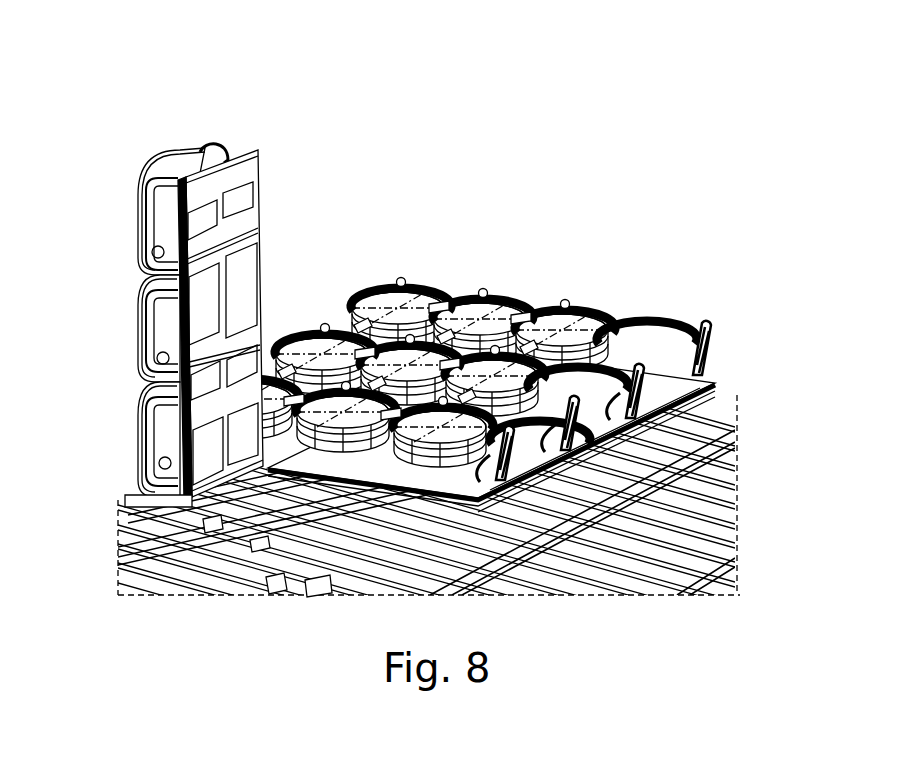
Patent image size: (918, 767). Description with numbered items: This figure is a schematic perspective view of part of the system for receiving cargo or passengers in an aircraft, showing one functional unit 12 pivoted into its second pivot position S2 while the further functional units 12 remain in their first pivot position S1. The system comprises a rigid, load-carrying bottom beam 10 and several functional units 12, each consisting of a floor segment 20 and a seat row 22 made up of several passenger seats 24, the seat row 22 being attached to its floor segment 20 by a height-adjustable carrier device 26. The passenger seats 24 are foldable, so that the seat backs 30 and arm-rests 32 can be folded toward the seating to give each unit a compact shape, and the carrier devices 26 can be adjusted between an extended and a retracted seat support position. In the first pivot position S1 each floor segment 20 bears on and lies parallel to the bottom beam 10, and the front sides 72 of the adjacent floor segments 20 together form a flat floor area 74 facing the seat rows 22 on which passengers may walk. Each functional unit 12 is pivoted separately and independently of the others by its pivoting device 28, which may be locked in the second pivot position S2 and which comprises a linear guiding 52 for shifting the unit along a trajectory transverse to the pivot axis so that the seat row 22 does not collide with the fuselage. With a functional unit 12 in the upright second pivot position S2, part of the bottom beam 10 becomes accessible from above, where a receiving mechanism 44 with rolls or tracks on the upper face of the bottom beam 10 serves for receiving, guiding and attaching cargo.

The bottom beam 10 is at (455, 428).
The functional unit 12 is at (263, 122).
The floor segment 20 is at (695, 388).
The seat row 22 is at (444, 272).
The passenger seat 24 is at (306, 342).
The carrier device 26 is at (707, 413).
The pivoting device 28 is at (215, 528).
The seat back 30 is at (394, 300).
The arm-rest 32 is at (358, 300).
The receiving mechanism 44 is at (272, 590).
The linear guiding 52 is at (130, 482).
The front side 72 is at (245, 165).
The floor area 74 is at (710, 364).
The first pivot position S1 is at (495, 355).
The second pivot position S2 is at (209, 263).